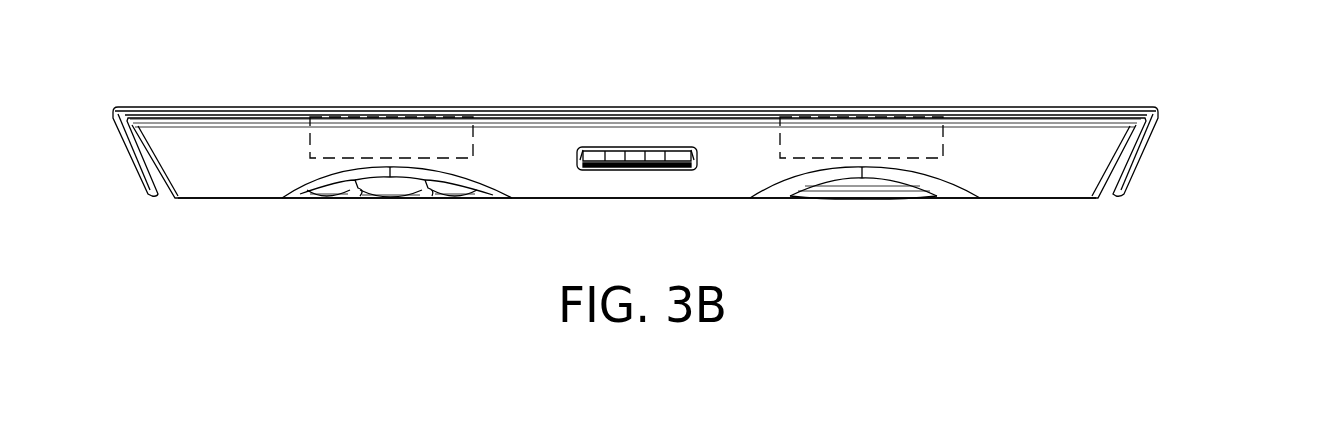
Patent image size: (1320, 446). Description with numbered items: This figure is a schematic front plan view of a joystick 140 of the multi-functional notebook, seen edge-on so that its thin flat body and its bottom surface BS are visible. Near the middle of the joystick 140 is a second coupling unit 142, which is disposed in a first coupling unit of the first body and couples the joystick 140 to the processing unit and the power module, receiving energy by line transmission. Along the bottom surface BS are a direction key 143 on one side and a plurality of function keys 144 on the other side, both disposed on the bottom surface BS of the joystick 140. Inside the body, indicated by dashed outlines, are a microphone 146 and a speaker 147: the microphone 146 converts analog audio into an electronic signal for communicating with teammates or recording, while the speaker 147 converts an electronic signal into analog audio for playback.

The joystick 140 is at (1182, 122).
The second coupling unit 142 is at (640, 147).
The direction key 143 is at (863, 200).
The function keys 144 is at (388, 200).
The microphone 146 is at (385, 117).
The speaker 147 is at (864, 117).
The bottom surface BS is at (1036, 203).